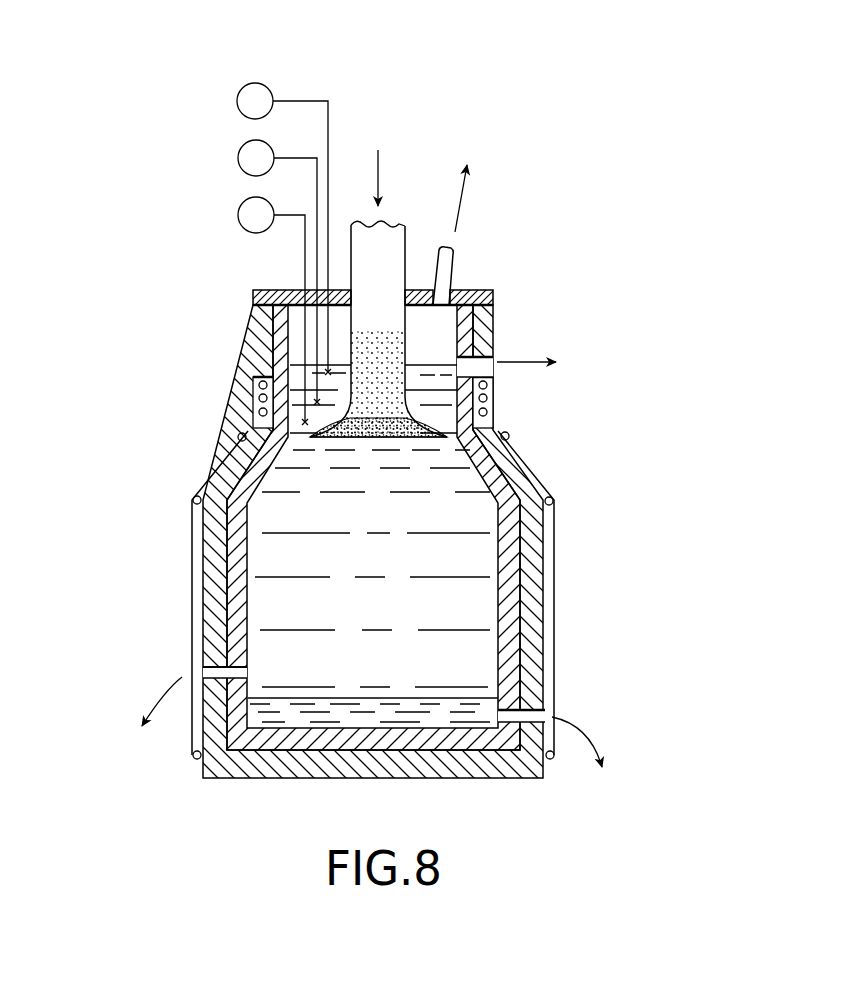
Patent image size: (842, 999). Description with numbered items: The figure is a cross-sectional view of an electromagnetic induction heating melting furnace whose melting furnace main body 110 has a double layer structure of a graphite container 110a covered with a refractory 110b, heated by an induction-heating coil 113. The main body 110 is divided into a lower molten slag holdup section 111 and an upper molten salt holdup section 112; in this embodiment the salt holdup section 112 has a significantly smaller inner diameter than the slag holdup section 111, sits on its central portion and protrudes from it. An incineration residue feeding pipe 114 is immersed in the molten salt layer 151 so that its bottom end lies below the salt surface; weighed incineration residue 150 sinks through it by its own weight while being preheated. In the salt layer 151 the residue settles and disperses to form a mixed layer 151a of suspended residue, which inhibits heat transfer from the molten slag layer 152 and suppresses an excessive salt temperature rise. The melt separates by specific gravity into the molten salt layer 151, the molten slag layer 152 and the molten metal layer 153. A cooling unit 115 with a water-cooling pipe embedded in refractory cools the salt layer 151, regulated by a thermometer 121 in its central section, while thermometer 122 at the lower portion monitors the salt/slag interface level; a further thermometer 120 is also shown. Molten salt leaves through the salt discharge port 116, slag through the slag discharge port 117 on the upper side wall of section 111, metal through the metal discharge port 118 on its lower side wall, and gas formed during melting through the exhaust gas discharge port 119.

The melting furnace main body 110 is at (353, 541).
The graphite container 110a is at (507, 577).
The refractory 110b is at (533, 605).
The molten slag holdup section 111 is at (208, 580).
The molten salt holdup section 112 is at (265, 375).
The induction-heating coil 113 is at (553, 517).
The incineration residue feeding pipe 114 is at (378, 243).
The cooling unit 115 is at (489, 412).
The salt discharge port 116 is at (478, 358).
The slag discharge port 117 is at (210, 672).
The metal discharge port 118 is at (533, 718).
The exhaust gas discharge port 119 is at (451, 255).
The thermocouple T1 120 is at (239, 93).
The thermometer 121 is at (239, 150).
The thermometer 122 is at (239, 207).
The incineration residue 150 is at (412, 304).
The molten salt layer 151 is at (417, 383).
The mixed layer 151a is at (450, 441).
The molten slag layer 152 is at (396, 617).
The molten metal layer 153 is at (363, 715).